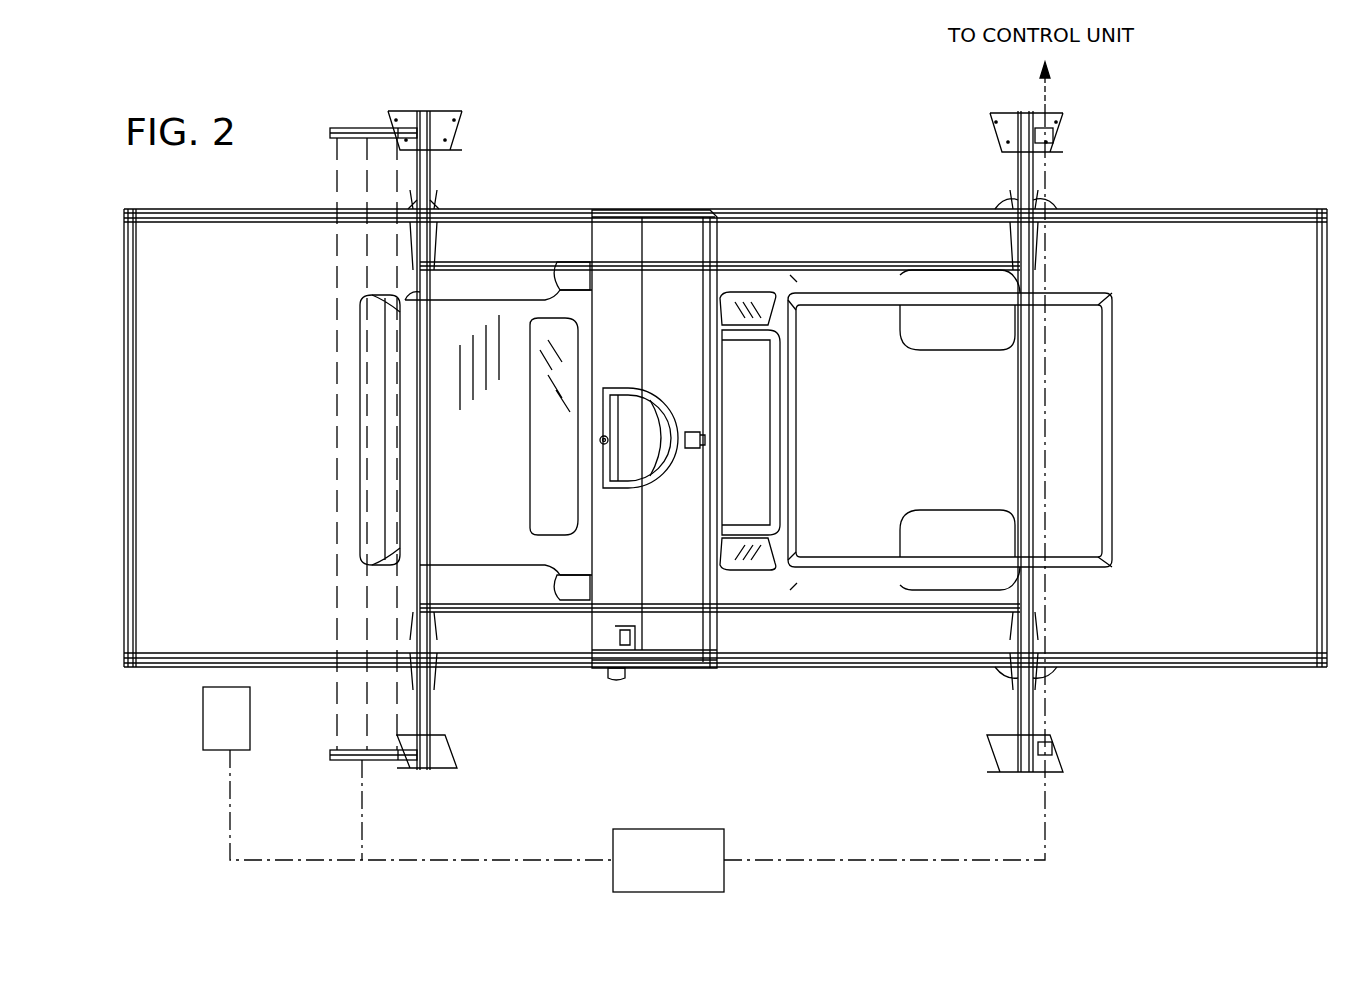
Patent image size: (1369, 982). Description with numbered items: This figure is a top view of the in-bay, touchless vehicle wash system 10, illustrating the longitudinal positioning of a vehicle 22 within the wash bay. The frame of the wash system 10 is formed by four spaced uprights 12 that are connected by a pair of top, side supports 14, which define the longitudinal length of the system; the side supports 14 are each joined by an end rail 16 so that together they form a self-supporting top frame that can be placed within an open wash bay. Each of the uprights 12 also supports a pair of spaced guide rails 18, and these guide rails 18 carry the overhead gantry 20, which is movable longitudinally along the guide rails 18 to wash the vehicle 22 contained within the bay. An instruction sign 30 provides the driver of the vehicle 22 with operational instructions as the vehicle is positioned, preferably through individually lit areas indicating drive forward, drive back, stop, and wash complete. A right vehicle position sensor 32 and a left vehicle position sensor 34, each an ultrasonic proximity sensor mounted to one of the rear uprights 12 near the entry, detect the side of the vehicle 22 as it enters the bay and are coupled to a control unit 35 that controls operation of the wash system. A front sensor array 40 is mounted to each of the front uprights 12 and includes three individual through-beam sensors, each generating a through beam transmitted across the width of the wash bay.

The in-bay, touchless vehicle wash system 10 is at (774, 168).
The uprights 12 is at (435, 165).
The top, side supports 14 is at (1165, 210).
The end rail 16 is at (137, 313).
The spaced guide rails 18 is at (818, 262).
The overhead gantry 20 is at (672, 245).
The vehicle 22 is at (1072, 405).
The instruction sign 30 is at (203, 715).
The right vehicle position sensor 32 is at (1055, 135).
The left vehicle position sensor 34 is at (1053, 740).
The control unit 35 is at (668, 829).
The front sensor array 40 is at (342, 125).